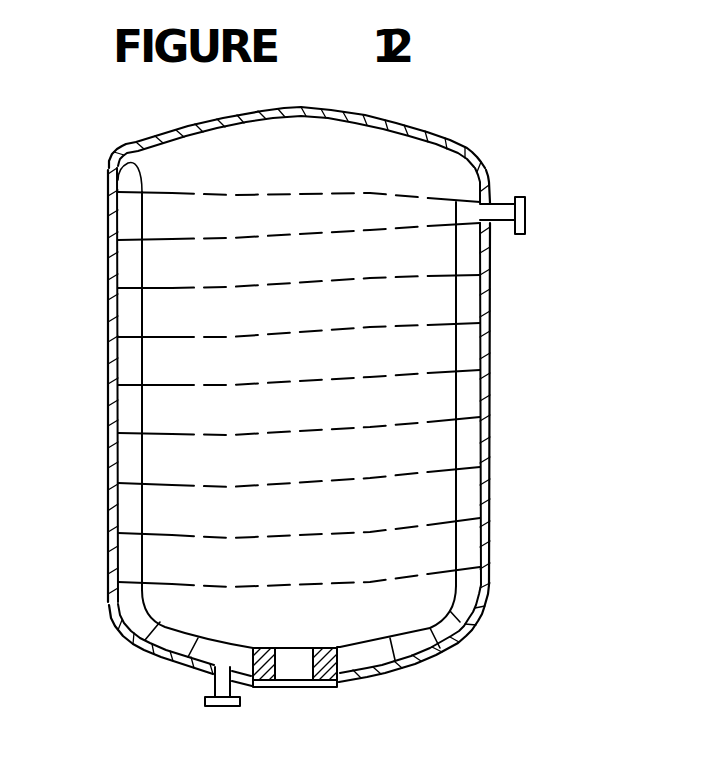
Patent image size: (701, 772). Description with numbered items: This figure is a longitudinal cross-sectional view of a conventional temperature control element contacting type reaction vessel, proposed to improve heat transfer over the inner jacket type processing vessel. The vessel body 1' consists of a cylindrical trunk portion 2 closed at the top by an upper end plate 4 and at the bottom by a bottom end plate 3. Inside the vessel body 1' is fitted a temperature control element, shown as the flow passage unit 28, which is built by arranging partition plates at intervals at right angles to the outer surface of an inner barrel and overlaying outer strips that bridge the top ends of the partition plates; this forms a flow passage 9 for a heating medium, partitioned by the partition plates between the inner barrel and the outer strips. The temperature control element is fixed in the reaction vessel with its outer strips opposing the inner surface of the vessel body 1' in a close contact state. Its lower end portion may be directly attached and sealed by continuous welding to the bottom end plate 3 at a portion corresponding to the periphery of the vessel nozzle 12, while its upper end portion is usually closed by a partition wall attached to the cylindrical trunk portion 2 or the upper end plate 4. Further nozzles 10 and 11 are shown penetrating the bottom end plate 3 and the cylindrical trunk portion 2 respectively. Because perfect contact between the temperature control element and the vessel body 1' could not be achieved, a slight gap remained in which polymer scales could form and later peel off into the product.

The vessel body 1' is at (247, 381).
The cylindrical trunk portion 2 is at (108, 352).
The upper end plate 4 is at (183, 122).
The flow passage unit 28 is at (118, 157).
The flow passage 9 is at (130, 417).
The bottom end plate 3 is at (178, 668).
The bottom nozzle 10 is at (213, 708).
The vessel nozzle 12 is at (322, 690).
The side nozzle 11 is at (525, 212).